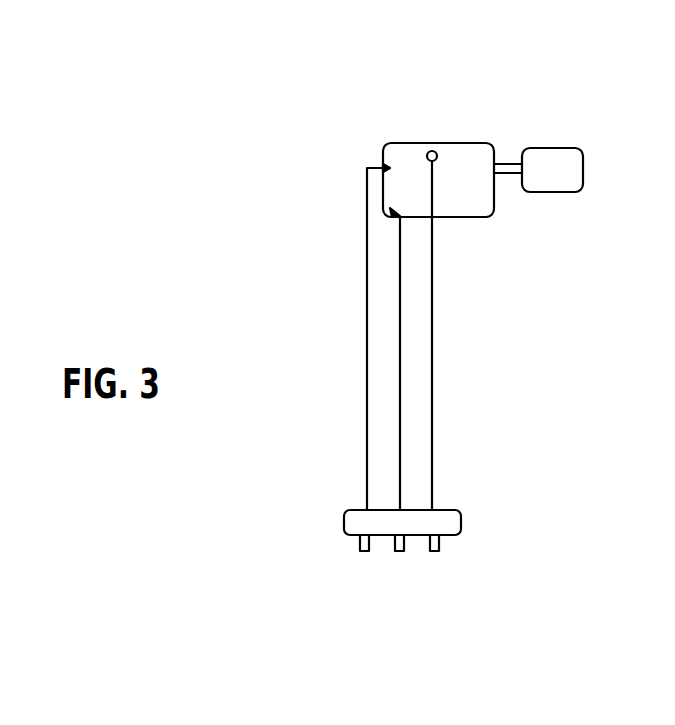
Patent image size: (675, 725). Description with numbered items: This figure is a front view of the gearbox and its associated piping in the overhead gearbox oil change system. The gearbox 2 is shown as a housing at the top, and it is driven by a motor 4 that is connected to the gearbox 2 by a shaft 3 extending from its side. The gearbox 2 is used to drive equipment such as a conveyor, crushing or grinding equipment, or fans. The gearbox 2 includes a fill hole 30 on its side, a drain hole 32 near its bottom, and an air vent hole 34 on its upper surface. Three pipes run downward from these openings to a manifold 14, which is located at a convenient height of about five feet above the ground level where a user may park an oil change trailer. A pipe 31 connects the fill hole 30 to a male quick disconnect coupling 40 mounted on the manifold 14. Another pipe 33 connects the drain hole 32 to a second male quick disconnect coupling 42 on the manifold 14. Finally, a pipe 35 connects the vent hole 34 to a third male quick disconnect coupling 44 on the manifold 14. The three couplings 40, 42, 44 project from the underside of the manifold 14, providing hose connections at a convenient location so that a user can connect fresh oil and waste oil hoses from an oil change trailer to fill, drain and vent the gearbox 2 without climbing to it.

The gearbox 2 is at (468, 162).
The shaft 3 is at (507, 164).
The motor 4 is at (551, 165).
The manifold 14 is at (357, 525).
The fill hole 30 is at (383, 162).
The pipe 31 is at (367, 377).
The drain hole 32 is at (393, 211).
The pipe 33 is at (400, 415).
The air vent hole 34 is at (432, 150).
The pipe 35 is at (433, 450).
The male quick disconnect coupling 40 is at (362, 552).
The male quick disconnect coupling 42 is at (398, 552).
The male quick disconnect coupling 44 is at (432, 552).